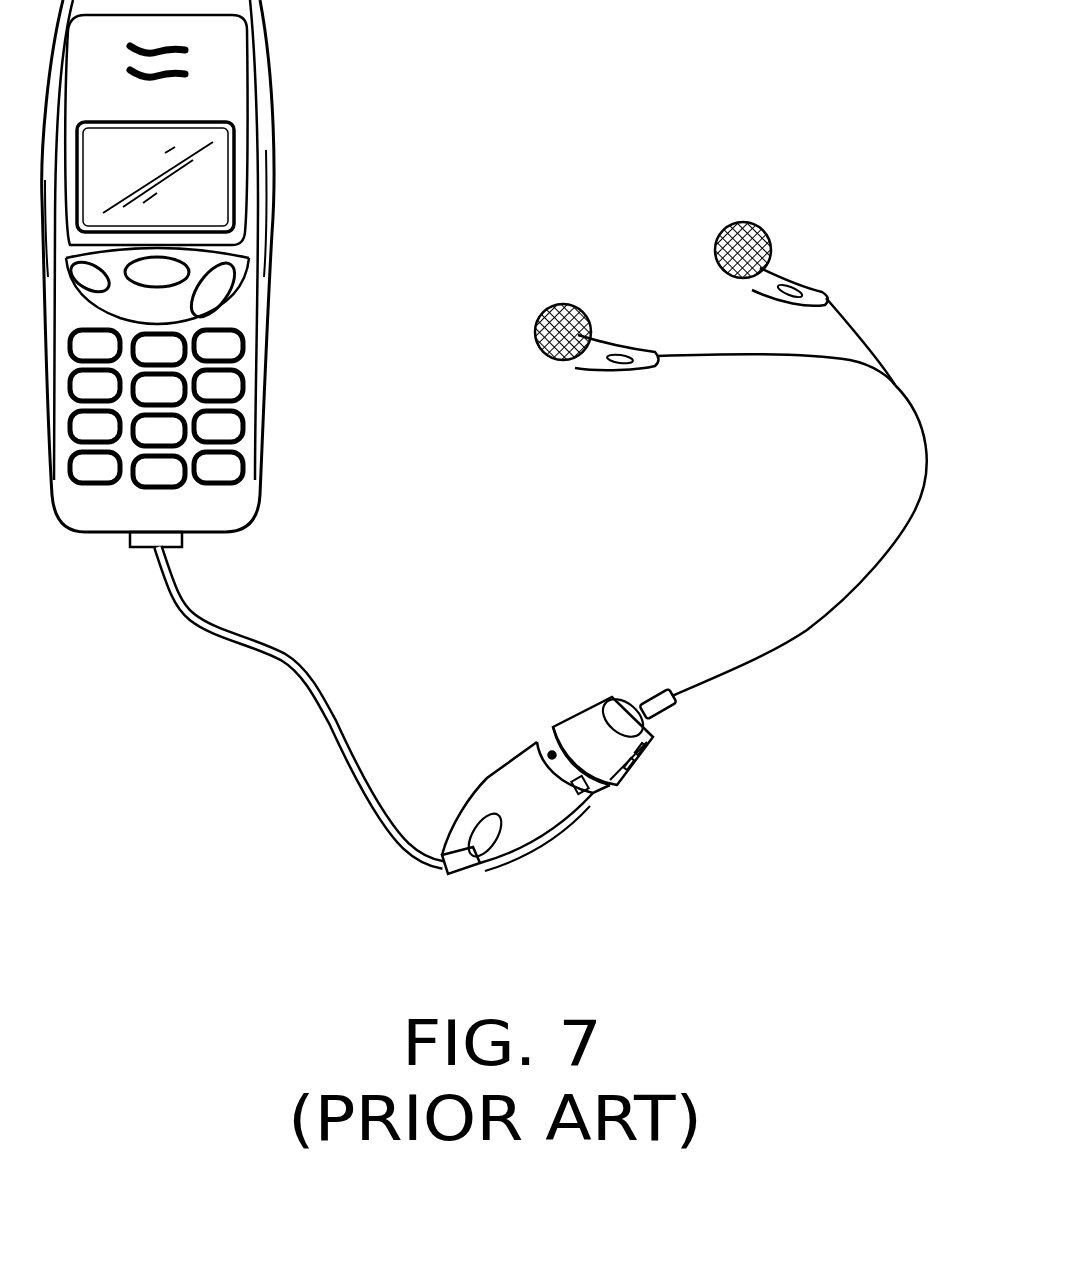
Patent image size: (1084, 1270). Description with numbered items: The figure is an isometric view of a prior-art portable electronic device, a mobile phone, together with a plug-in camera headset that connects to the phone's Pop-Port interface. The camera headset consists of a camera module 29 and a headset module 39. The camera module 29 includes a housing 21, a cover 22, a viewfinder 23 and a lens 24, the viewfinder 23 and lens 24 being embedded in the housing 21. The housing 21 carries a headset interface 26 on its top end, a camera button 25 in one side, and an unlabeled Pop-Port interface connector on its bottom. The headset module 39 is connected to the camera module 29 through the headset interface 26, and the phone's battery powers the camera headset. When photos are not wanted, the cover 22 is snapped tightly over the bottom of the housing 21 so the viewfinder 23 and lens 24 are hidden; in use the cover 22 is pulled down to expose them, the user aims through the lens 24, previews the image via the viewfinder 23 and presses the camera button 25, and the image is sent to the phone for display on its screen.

The housing 21 is at (585, 725).
The cover 22 is at (503, 797).
The viewfinder 23 is at (590, 797).
The lens 24 is at (548, 750).
The camera button 25 is at (642, 762).
The headset interface 26 is at (668, 710).
The camera module 29 is at (577, 766).
The headset module 39 is at (822, 292).